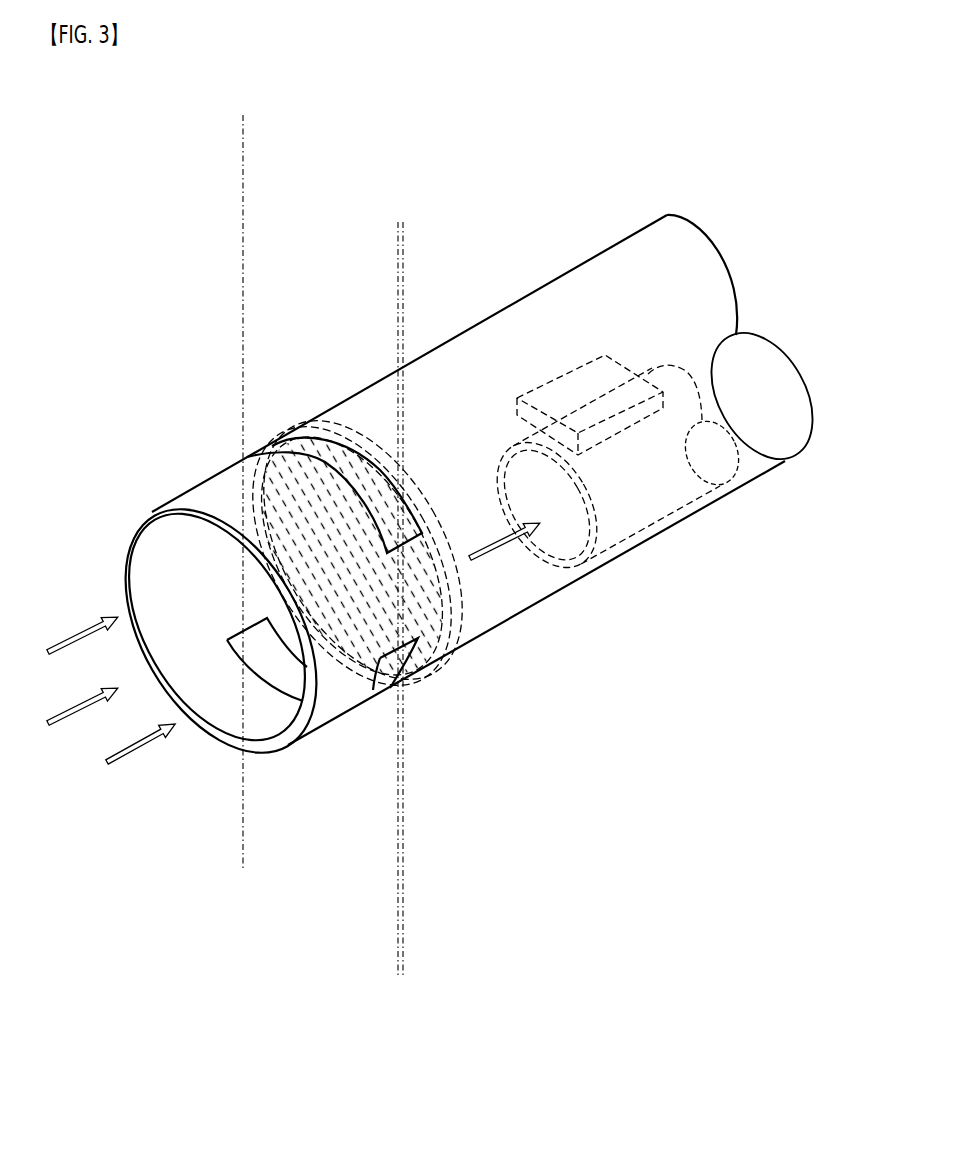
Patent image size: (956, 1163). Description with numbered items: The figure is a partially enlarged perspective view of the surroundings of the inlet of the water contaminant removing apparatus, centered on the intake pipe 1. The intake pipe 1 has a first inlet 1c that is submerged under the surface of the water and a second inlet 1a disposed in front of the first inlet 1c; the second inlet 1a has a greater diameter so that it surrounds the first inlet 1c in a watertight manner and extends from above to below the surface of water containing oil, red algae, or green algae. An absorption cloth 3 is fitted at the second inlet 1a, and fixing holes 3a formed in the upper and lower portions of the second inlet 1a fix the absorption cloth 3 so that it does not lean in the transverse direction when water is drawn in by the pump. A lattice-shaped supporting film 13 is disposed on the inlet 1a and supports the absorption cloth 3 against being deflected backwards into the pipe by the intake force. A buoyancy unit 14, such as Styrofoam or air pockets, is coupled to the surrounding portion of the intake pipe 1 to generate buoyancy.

The intake pipe 1 is at (440, 360).
The second inlet 1a is at (133, 541).
The first inlet 1c is at (572, 578).
The absorption cloth 3 is at (243, 300).
The fixing holes 3a is at (305, 435).
The lattice-shaped supporting film 13 is at (452, 632).
The buoyancy unit 14 is at (575, 392).